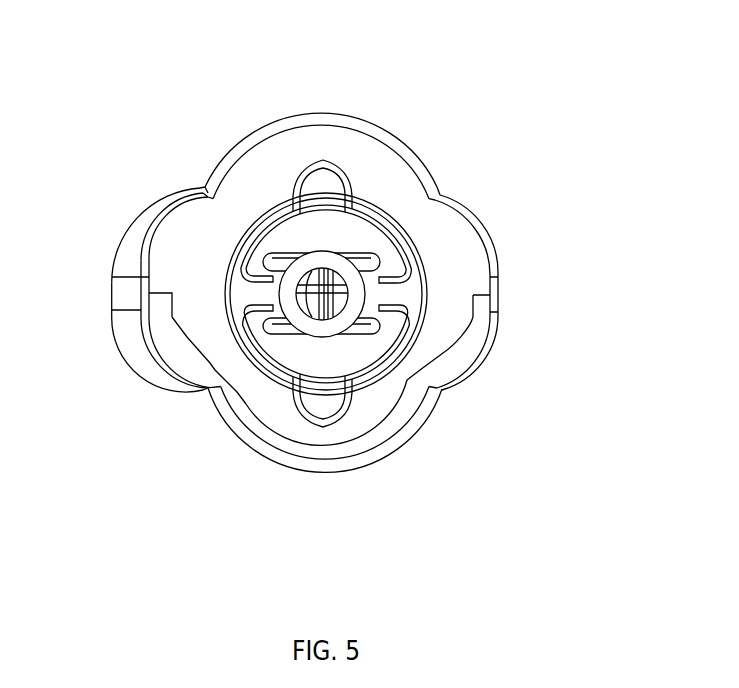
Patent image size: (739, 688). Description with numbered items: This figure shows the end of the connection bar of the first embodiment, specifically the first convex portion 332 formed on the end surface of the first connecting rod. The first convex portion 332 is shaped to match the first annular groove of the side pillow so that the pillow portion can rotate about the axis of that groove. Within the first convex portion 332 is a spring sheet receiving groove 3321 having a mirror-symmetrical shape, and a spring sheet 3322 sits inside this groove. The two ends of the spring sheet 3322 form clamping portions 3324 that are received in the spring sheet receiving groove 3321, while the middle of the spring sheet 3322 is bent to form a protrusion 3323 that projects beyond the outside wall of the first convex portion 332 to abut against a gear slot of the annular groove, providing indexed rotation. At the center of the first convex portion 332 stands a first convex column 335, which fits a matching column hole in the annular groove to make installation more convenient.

The first convex portion 332 is at (321, 218).
The spring sheet receiving groove 3321 is at (252, 296).
The spring sheet 3322 is at (265, 232).
The protrusion 3323 is at (335, 164).
The clamping portions 3324 is at (242, 266).
The first convex column 335 is at (313, 320).